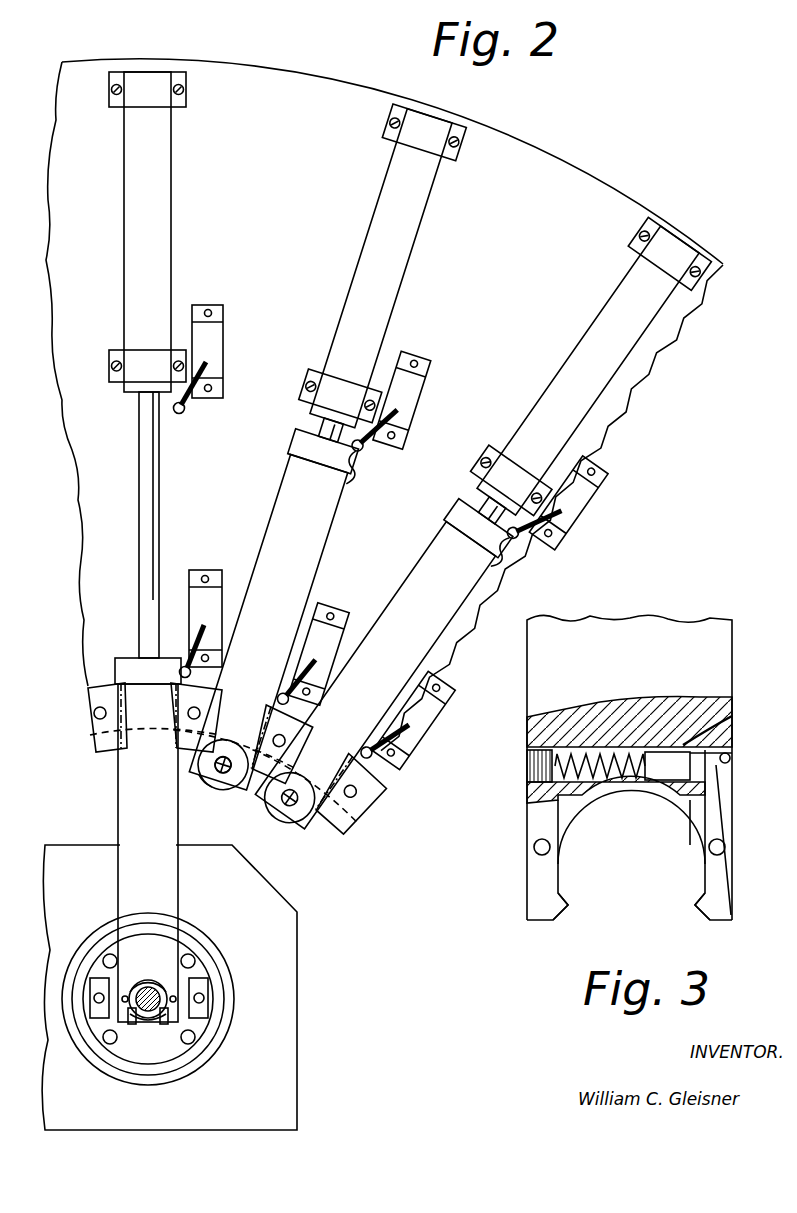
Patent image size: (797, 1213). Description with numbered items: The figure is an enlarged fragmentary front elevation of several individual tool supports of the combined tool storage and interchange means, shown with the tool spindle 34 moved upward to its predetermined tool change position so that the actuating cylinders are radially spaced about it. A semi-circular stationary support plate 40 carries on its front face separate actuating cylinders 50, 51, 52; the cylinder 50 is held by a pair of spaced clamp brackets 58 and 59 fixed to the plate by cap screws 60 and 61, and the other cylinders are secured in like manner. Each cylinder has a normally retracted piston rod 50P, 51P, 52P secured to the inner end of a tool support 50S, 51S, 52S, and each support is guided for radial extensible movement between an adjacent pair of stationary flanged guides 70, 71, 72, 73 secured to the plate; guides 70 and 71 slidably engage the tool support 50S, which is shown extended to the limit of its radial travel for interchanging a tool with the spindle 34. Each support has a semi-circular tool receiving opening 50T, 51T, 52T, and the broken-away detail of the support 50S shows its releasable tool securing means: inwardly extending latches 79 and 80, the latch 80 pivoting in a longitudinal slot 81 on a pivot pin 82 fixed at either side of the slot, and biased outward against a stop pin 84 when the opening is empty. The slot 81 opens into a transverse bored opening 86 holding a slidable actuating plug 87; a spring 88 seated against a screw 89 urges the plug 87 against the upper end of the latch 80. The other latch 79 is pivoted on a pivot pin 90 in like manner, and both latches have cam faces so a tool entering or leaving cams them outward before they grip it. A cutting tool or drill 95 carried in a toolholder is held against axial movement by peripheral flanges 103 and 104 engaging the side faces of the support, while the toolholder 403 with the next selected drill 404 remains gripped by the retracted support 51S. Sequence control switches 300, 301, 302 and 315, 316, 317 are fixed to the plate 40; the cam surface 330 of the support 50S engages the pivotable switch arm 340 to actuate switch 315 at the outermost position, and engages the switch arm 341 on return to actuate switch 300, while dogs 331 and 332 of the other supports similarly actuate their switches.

In FIG. 2, the tool spindle 34 is at (195, 972).
In FIG. 2, the support plate 40 is at (517, 157).
In FIG. 2, the actuating cylinder 50 is at (154, 211).
In FIG. 2, the actuating cylinder 51 is at (394, 248).
In FIG. 2, the actuating cylinder 52 is at (602, 364).
In FIG. 2, the piston rod 50P is at (142, 432).
In FIG. 2, the piston rod 51P is at (318, 428).
In FIG. 2, the piston rod 52P is at (483, 507).
In FIG. 2, the tool support 50S is at (161, 839).
In FIG. 3, the tool support 50S is at (660, 636).
In FIG. 2, the tool support 51S is at (309, 533).
In FIG. 2, the tool support 52S is at (443, 594).
In FIG. 3, the semi-circular tool receiving opening 50T is at (669, 818).
In FIG. 2, the semi-circular tool receiving opening 51T is at (221, 797).
In FIG. 2, the semi-circular tool receiving opening 52T is at (282, 829).
In FIG. 2, the clamp bracket 58 is at (154, 96).
In FIG. 2, the clamp bracket 59 is at (154, 372).
In FIG. 2, the cap screw 60 is at (110, 92).
In FIG. 2, the cap screw 61 is at (117, 361).
In FIG. 2, the stationary flanged guide 70 is at (107, 722).
In FIG. 2, the stationary flanged guide 71 is at (176, 740).
In FIG. 2, the stationary flanged guide 72 is at (273, 762).
In FIG. 2, the stationary flanged guide 73 is at (320, 810).
In FIG. 2, the tool engaging latch 79 is at (136, 1026).
In FIG. 3, the tool engaging latch 79 is at (560, 905).
In FIG. 2, the tool engaging latch 80 is at (162, 1026).
In FIG. 3, the tool engaging latch 80 is at (700, 905).
In FIG. 3, the longitudinal slot 81 is at (690, 802).
In FIG. 3, the pivot pin 82 is at (725, 846).
In FIG. 3, the stop pin 84 is at (730, 757).
In FIG. 3, the transverse bored opening 86 is at (661, 770).
In FIG. 3, the actuating plug 87 is at (692, 752).
In FIG. 3, the spring 88 is at (590, 750).
In FIG. 3, the screw 89 is at (535, 760).
In FIG. 3, the pivot pin 90 is at (534, 849).
In FIG. 2, the cutting tool 95 is at (152, 990).
In FIG. 2, the peripheral flange 103 is at (148, 977).
In FIG. 2, the peripheral flange 104 is at (148, 1026).
In FIG. 2, the sequence control switch 300 is at (214, 343).
In FIG. 2, the sequence control switch 301 is at (408, 398).
In FIG. 2, the sequence control switch 302 is at (562, 505).
In FIG. 2, the sequence control switch 315 is at (214, 600).
In FIG. 2, the sequence control switch 316 is at (340, 640).
In FIG. 2, the sequence control switch 317 is at (430, 736).
In FIG. 2, the cam surface 330 is at (184, 650).
In FIG. 2, the dog 331 is at (347, 462).
In FIG. 2, the dog 332 is at (507, 548).
In FIG. 2, the pivotable switch arm 340 is at (204, 620).
In FIG. 2, the pivotable switch arm 341 is at (189, 402).
In FIG. 2, the toolholder 403 is at (196, 789).
In FIG. 2, the drill 404 is at (225, 757).